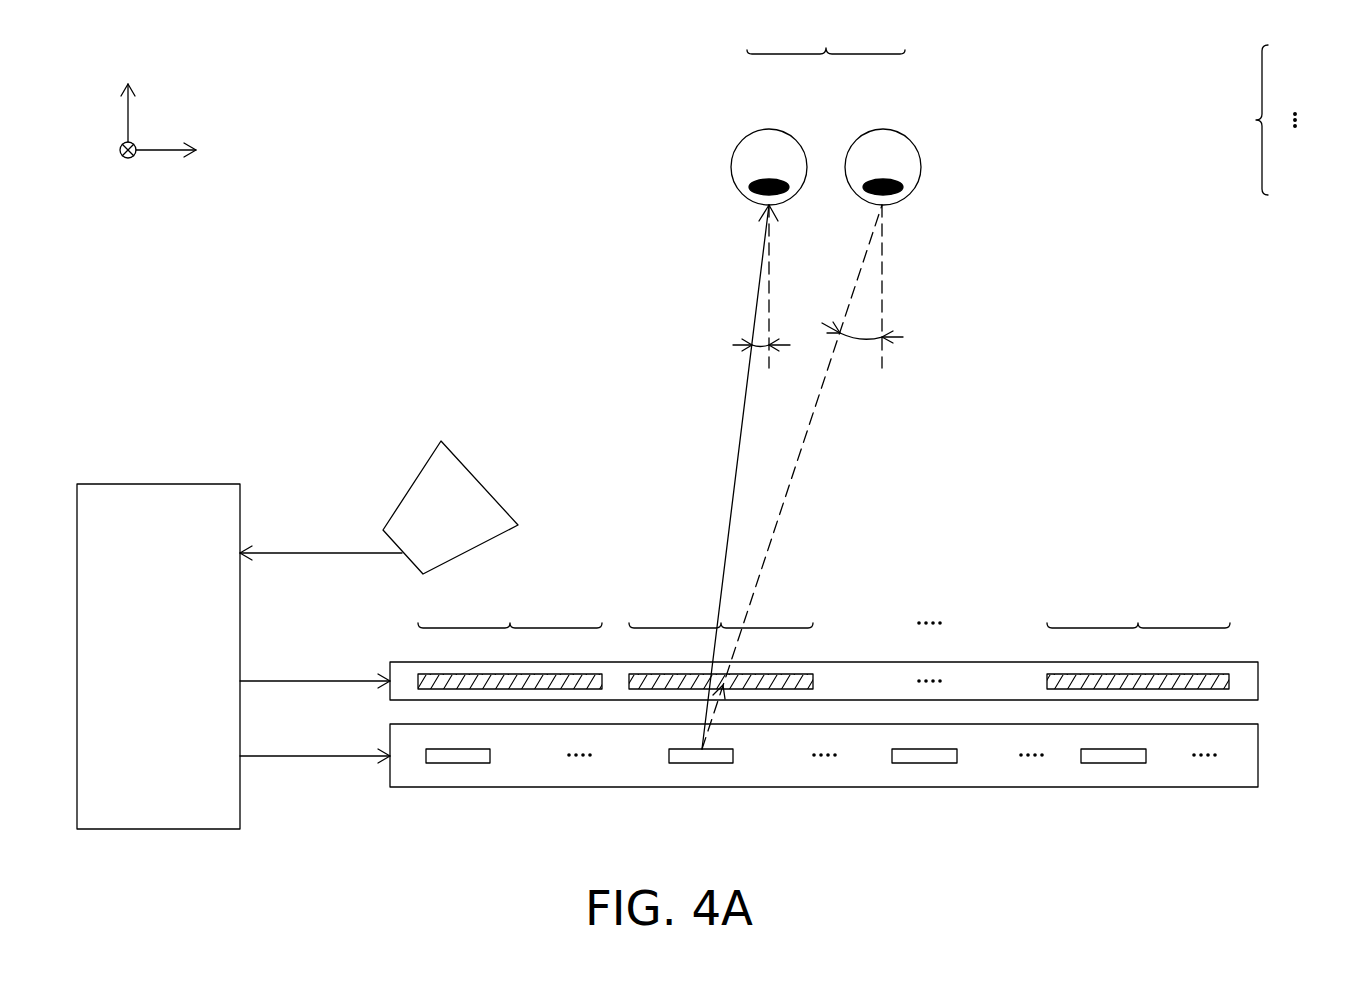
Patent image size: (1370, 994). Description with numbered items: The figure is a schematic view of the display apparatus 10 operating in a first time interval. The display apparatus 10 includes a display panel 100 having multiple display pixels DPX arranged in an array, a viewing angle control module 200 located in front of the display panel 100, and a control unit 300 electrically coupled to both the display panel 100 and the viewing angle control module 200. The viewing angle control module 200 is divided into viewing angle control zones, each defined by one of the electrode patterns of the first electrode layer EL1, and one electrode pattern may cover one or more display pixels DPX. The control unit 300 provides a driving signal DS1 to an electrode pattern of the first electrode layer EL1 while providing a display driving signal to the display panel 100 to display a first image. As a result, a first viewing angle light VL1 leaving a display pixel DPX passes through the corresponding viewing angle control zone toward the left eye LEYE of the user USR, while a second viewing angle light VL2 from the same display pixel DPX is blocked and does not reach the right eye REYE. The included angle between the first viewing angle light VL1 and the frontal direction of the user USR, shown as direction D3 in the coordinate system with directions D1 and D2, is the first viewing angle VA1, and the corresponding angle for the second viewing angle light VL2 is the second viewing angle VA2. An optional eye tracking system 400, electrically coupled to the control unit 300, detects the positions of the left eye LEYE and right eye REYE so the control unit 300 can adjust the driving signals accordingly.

The display apparatus 10 is at (1320, 843).
The display panel 100 is at (1240, 753).
The viewing angle control module 200 is at (1240, 681).
The control unit 300 is at (130, 484).
The eye tracking system 400 is at (422, 497).
The driving signal DS1 is at (315, 668).
The first electrode layer EL1 is at (1285, 120).
The display pixel DPX is at (703, 763).
The first viewing angle light VL1 is at (733, 477).
The second viewing angle light VL2 is at (713, 713).
The first viewing angle VA1 is at (743, 286).
The second viewing angle VA2 is at (882, 286).
The user USR is at (826, 36).
The left eye LEYE is at (768, 140).
The right eye REYE is at (883, 140).
The direction D1 is at (180, 151).
The direction D2 is at (114, 151).
The direction D3 is at (129, 98).